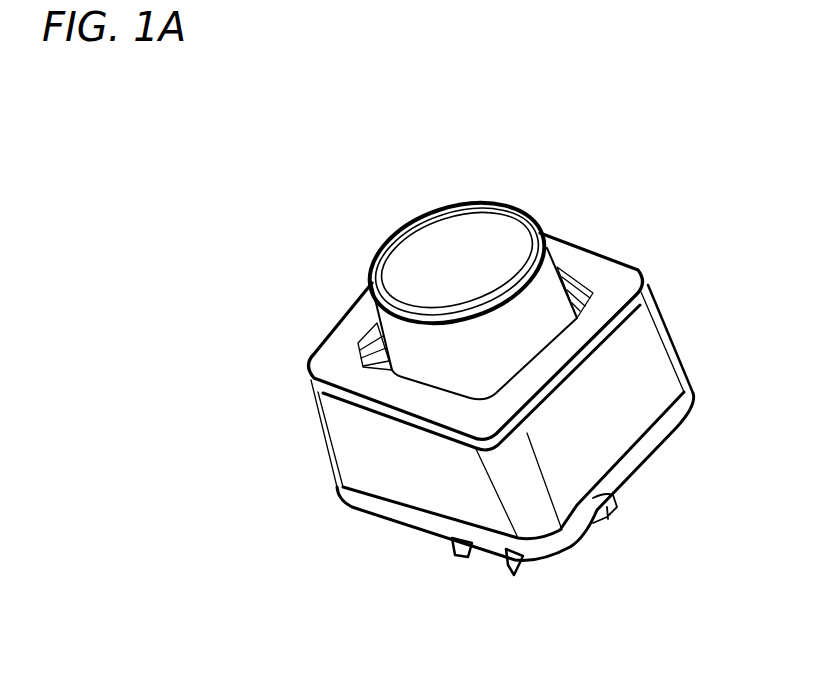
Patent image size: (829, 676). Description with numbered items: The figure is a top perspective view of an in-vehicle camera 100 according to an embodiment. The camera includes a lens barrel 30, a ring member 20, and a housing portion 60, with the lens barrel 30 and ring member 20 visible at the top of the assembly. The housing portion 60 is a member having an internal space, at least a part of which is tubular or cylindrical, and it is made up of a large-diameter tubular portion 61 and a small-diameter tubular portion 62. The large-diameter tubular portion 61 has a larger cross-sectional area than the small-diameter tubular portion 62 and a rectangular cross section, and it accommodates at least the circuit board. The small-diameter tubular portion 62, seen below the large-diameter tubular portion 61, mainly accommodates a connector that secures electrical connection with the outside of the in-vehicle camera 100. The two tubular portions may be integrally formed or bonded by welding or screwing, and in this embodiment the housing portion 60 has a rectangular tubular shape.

The in-vehicle camera 100 is at (590, 150).
The ring member 20 is at (651, 282).
The lens barrel 30 is at (390, 232).
The housing portion 60 is at (253, 487).
The large-diameter tubular portion 61 is at (331, 467).
The small-diameter tubular portion 62 is at (457, 557).